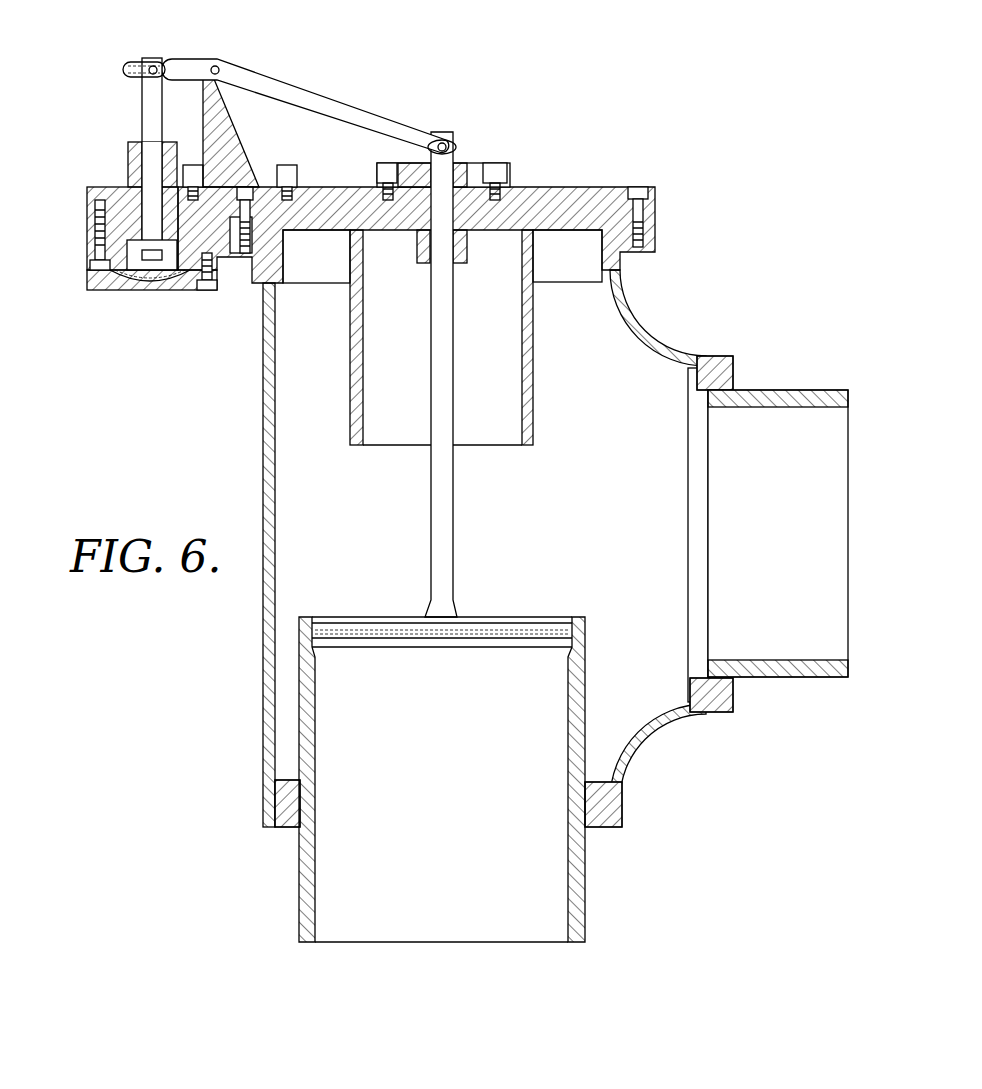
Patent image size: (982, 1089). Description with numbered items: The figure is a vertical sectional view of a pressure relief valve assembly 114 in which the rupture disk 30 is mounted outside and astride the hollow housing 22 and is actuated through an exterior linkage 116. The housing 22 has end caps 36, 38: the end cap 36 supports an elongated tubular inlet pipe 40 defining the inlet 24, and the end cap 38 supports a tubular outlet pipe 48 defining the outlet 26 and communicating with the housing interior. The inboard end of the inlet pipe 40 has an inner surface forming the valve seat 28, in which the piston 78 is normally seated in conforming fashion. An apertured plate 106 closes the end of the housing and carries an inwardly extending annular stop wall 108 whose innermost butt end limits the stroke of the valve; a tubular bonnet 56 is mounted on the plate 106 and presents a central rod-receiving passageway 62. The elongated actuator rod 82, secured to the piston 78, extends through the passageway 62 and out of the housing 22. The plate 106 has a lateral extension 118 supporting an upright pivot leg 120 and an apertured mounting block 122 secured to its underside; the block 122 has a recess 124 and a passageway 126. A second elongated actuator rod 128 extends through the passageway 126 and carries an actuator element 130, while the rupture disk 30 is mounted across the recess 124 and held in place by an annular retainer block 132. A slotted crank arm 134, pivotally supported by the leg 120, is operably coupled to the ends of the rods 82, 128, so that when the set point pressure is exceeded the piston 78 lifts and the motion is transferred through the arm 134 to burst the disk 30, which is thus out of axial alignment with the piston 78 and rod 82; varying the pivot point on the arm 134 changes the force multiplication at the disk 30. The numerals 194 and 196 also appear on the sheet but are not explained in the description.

The housing 22 is at (682, 320).
The inlet 24 is at (467, 753).
The outlet 26 is at (824, 380).
The valve seat 28 is at (598, 618).
The rupture disk 30 is at (150, 312).
The end cap 36 is at (613, 818).
The end cap 38 is at (734, 700).
The inlet pipe 40 is at (302, 892).
The outlet pipe 48 is at (800, 674).
The bonnet 56 is at (468, 163).
The rod-receiving passageway 62 is at (452, 262).
The piston 78 is at (357, 622).
The actuator rod 82 is at (436, 520).
The apertured plate 106 is at (603, 192).
The annular stop wall 108 is at (529, 427).
The valve assembly 114 is at (702, 254).
The exterior linkage 116 is at (264, 126).
The lateral extension 118 is at (105, 187).
The pivot leg 120 is at (238, 137).
The mounting block 122 is at (98, 242).
The recess 124 is at (170, 257).
The passageway 126 is at (145, 156).
The actuator rod 128 is at (147, 97).
The actuator element 130 is at (154, 271).
The retainer block 132 is at (100, 288).
The slotted crank arm 134 is at (380, 120).
The element 194 is at (505, 11).
The element 196 is at (577, 5).